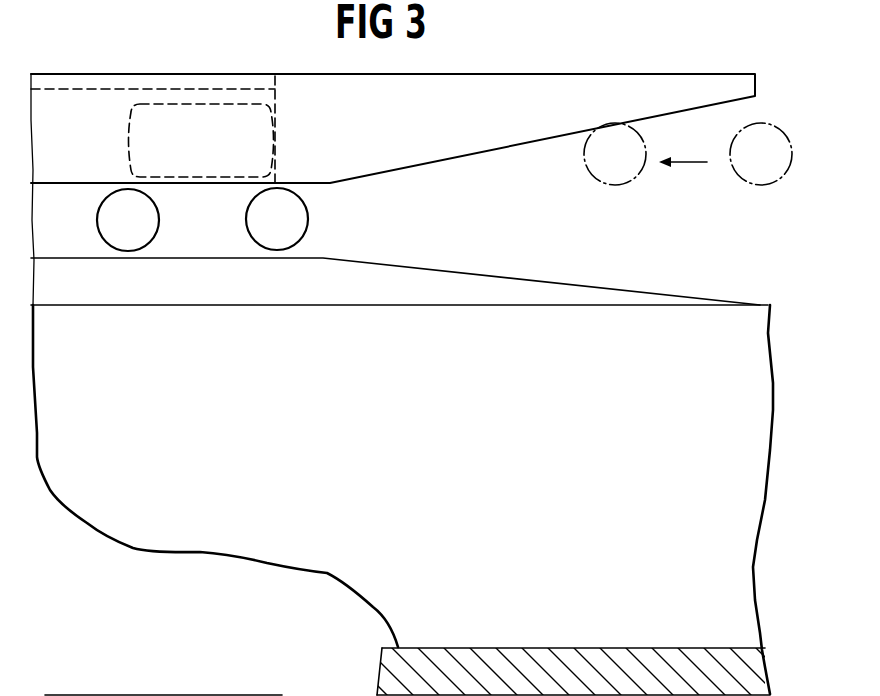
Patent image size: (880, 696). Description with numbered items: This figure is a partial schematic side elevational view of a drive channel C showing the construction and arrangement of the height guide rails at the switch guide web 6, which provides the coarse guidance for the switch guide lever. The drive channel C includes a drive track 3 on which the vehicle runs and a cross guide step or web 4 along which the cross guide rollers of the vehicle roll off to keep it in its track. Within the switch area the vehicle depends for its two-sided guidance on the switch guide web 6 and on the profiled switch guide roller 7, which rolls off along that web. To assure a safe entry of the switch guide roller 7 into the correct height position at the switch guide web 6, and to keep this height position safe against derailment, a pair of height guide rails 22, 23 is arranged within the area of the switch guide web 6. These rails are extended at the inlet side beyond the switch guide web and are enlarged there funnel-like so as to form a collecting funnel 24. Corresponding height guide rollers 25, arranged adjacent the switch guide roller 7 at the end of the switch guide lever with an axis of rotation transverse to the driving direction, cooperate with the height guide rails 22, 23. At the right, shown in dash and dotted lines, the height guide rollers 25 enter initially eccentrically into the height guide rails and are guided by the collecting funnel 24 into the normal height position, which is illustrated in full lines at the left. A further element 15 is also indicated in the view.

The switch guide web 6 is at (100, 70).
The switch guide roller 7 is at (248, 138).
The height guide rail 22 is at (55, 185).
The height guide rail 23 is at (128, 290).
The collecting funnel 24 is at (458, 159).
The height guide roller 25 is at (258, 222).
The cross guide web 4 is at (548, 455).
The drive track 3 is at (567, 647).
The support 15 is at (297, 695).
The drive channel C is at (798, 490).